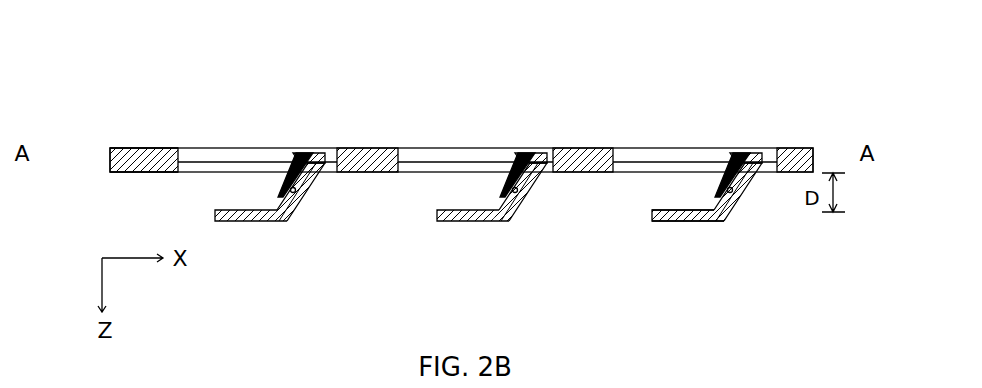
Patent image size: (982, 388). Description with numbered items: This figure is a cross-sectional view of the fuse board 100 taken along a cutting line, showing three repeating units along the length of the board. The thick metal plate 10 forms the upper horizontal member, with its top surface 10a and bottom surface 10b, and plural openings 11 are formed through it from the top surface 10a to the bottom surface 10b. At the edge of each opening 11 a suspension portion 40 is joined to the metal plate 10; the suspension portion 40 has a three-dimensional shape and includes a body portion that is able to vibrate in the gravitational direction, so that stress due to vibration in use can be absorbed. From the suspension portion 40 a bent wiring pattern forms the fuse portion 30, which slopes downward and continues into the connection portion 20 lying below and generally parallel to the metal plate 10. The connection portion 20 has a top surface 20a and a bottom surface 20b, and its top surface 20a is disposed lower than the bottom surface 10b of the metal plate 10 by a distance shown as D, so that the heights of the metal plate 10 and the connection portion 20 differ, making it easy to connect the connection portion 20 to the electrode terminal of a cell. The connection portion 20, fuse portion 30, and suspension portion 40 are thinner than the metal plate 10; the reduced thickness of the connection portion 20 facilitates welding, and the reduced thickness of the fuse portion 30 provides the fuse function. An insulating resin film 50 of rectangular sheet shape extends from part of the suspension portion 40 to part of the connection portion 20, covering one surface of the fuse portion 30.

The fuse board 100 is at (797, 104).
The metal plate 10 is at (153, 160).
The top surface 10a is at (138, 149).
The bottom surface 10b is at (128, 173).
The opening 11 is at (233, 158).
The connection portion 20 is at (215, 213).
The top surface 20a is at (670, 210).
The bottom surface 20b is at (672, 221).
The fuse portion 30 is at (306, 200).
The suspension portion 40 is at (303, 152).
The insulating resin film 50 is at (283, 190).